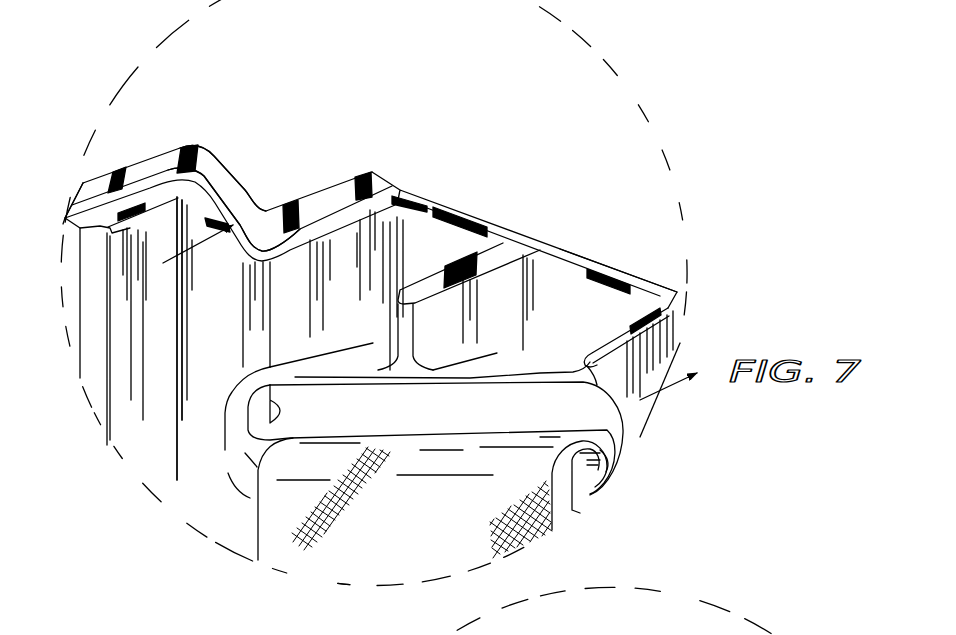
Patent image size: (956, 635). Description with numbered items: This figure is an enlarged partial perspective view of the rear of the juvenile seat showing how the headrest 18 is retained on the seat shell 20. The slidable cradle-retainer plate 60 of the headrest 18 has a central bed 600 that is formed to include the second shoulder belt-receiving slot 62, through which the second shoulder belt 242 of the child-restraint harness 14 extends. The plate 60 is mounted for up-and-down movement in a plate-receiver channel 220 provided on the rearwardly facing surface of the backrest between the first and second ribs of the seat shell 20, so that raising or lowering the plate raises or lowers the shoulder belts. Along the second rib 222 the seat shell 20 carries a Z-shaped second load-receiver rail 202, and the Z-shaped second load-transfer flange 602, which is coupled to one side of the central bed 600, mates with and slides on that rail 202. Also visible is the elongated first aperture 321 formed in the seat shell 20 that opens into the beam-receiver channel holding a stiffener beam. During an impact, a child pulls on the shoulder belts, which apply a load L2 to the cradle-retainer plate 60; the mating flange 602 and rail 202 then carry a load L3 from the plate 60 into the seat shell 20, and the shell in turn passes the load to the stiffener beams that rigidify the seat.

The child-restraint harness 14 is at (310, 553).
The headrest 18 is at (498, 217).
The seat shell 20 is at (133, 156).
The slidable cradle-retainer plate 60 is at (645, 268).
The second shoulder belt-receiving slot 62 is at (272, 430).
The second load-receiver rail 202 is at (252, 184).
The plate-receiver channel 220 is at (428, 184).
The second rib 222 is at (80, 183).
The second shoulder belt 242 is at (372, 562).
The elongated first aperture 321 is at (180, 146).
The central bed 600 is at (578, 240).
The second Z-shaped load-transfer flange 602 is at (218, 342).
The load L2 is at (668, 395).
The load L3 is at (206, 246).